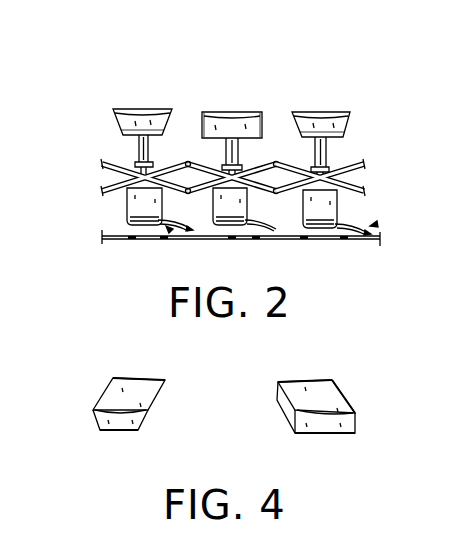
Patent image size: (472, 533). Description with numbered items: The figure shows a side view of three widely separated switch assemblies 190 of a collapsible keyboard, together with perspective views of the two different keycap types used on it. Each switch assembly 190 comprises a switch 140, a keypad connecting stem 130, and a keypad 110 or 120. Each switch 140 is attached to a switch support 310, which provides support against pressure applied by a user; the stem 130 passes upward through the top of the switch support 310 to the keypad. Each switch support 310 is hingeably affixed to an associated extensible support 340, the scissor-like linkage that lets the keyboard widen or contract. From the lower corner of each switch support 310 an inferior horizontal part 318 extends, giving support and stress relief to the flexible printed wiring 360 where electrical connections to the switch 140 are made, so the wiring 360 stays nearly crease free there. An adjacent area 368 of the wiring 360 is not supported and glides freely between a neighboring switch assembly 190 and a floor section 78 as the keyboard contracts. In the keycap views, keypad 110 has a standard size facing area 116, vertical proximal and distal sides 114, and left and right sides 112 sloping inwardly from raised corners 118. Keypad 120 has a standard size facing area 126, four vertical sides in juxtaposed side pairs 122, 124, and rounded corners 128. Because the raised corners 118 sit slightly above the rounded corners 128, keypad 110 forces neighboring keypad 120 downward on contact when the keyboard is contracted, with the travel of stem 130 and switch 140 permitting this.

In FIG. 2, the floor section 78 is at (255, 240).
In FIG. 2, the keypad 110 is at (156, 100).
In FIG. 4, the keypad 110 is at (134, 370).
In FIG. 2, the left and right sides 112 is at (118, 126).
In FIG. 4, the left and right sides 112 is at (97, 427).
In FIG. 2, the vertical proximal and distal sides 114 is at (138, 120).
In FIG. 4, the vertical proximal and distal sides 114 is at (150, 385).
In FIG. 2, the facing area 116 is at (120, 110).
In FIG. 4, the facing area 116 is at (115, 378).
In FIG. 2, the raised corners 118 is at (113, 111).
In FIG. 4, the raised corners 118 is at (102, 392).
In FIG. 2, the keypad 120 is at (242, 100).
In FIG. 4, the keypad 120 is at (320, 372).
In FIG. 4, the side pair 122 is at (357, 425).
In FIG. 4, the side pair 124 is at (292, 380).
In FIG. 2, the facing area 126 is at (224, 95).
In FIG. 4, the facing area 126 is at (335, 393).
In FIG. 2, the rounded corners 128 is at (200, 110).
In FIG. 4, the rounded corners 128 is at (280, 382).
In FIG. 2, the keypad connecting stem 130 is at (130, 150).
In FIG. 2, the switch 140 is at (365, 190).
In FIG. 2, the switch assembly 190 is at (93, 180).
In FIG. 2, the switch support 310 is at (118, 207).
In FIG. 2, the inferior horizontal part 318 is at (132, 240).
In FIG. 2, the extensible support 340 is at (368, 175).
In FIG. 2, the flexible printed wiring 360 is at (170, 232).
In FIG. 2, the area 368 is at (192, 227).